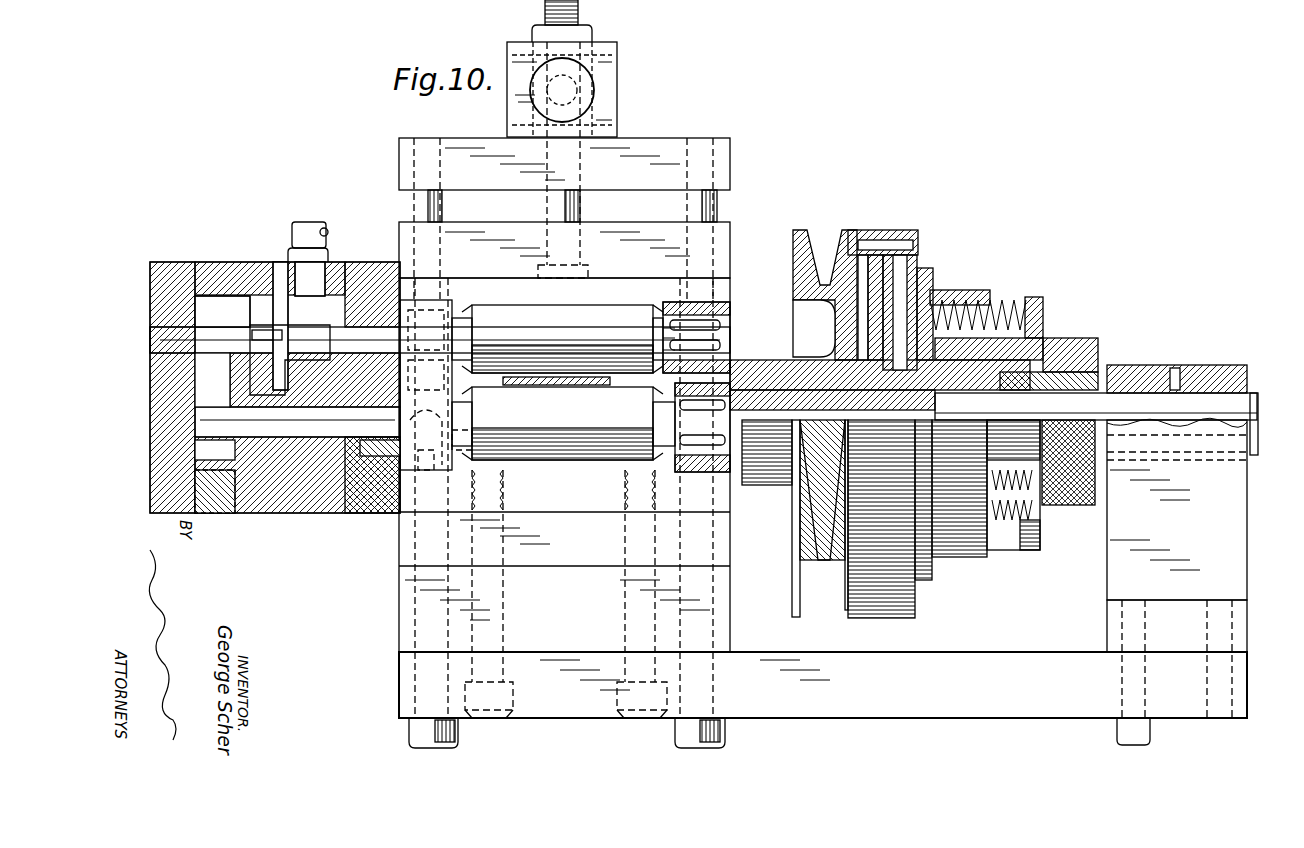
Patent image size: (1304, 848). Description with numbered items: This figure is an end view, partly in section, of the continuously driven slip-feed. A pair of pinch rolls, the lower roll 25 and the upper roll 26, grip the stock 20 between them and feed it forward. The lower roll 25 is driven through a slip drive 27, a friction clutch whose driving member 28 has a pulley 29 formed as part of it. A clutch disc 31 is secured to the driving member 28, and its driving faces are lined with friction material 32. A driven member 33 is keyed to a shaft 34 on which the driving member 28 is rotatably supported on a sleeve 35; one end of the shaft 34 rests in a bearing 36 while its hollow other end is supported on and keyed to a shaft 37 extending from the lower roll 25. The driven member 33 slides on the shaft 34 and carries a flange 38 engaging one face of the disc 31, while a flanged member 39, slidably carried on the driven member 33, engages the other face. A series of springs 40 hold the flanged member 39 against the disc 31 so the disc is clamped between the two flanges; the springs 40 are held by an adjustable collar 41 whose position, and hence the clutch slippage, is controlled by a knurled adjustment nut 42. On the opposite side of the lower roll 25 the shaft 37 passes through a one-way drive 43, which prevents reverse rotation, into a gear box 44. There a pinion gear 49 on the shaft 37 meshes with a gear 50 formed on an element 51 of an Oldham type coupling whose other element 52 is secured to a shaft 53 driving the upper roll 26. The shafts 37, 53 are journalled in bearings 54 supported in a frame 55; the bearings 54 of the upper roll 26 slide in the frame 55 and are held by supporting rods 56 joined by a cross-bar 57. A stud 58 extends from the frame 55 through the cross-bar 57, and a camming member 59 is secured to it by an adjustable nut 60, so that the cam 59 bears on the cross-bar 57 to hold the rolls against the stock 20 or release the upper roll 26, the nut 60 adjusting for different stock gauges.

The stock 20 is at (535, 385).
The lower roll 25 is at (585, 430).
The upper roll 26 is at (585, 312).
The slip drive 27 is at (940, 585).
The driving member 28 is at (882, 615).
The pulley 29 is at (825, 570).
The clutch disc 31 is at (895, 280).
The friction material 32 is at (858, 290).
The driven member 33 is at (995, 555).
The shaft 34 is at (1190, 400).
The sleeve 35 is at (758, 365).
The bearing 36 is at (1150, 368).
The shaft 37 is at (750, 430).
The flange 38 is at (858, 330).
The flanged member 39 is at (985, 305).
The springs 40 is at (1034, 297).
The adjustable collar 41 is at (1046, 320).
The knurled adjustment nut 42 is at (1090, 340).
The one-way drive 43 is at (370, 515).
The gear box 44 is at (282, 515).
The pinion gear 49 is at (240, 500).
The gear 50 is at (207, 300).
The coupling element 51 is at (276, 296).
The coupling element 52 is at (332, 308).
The shaft 53 is at (718, 340).
The bearings 54 is at (680, 312).
The frame 55 is at (610, 240).
The supporting rods 56 is at (422, 210).
The cross-bar 57 is at (660, 148).
The stud 58 is at (550, 207).
The camming member 59 is at (617, 93).
The adjustable nut 60 is at (592, 32).